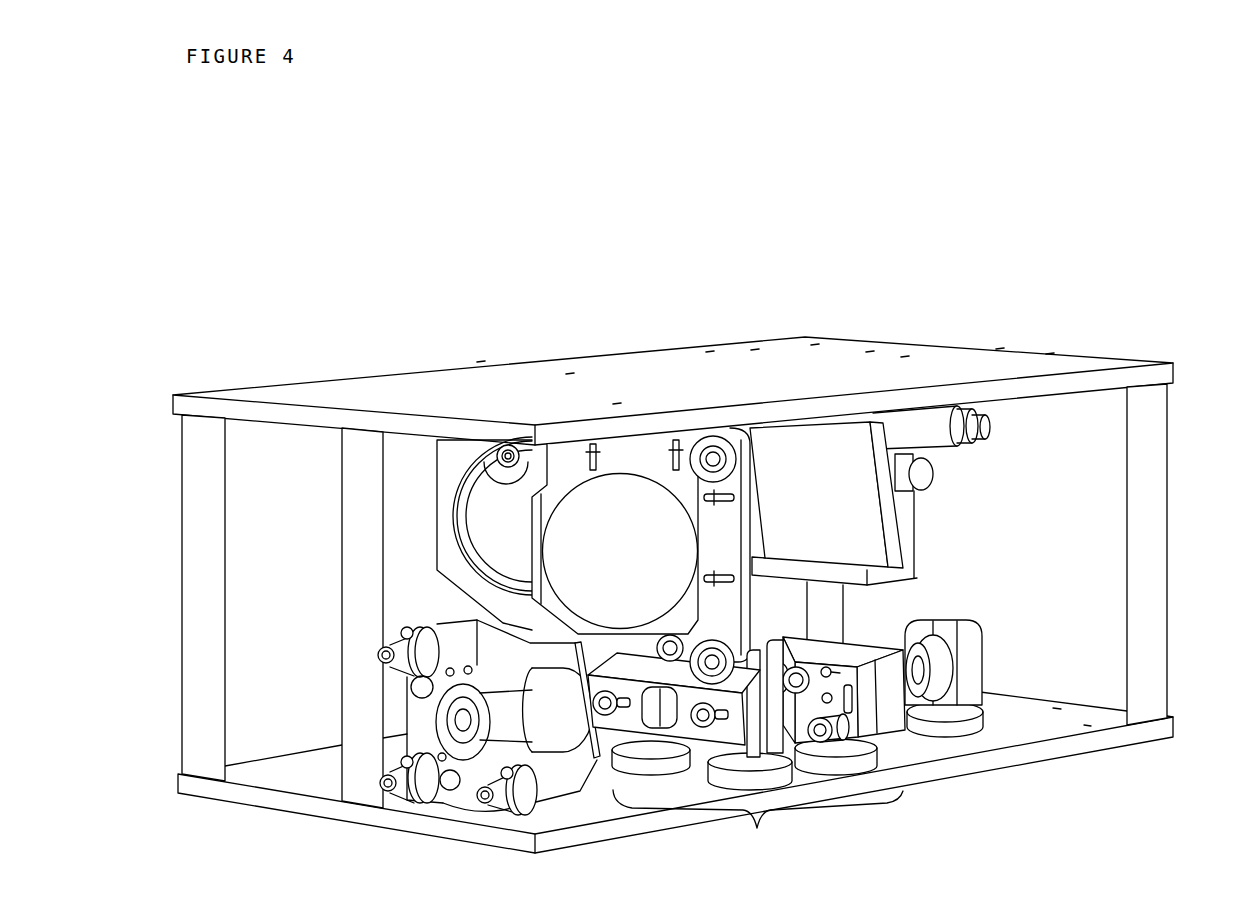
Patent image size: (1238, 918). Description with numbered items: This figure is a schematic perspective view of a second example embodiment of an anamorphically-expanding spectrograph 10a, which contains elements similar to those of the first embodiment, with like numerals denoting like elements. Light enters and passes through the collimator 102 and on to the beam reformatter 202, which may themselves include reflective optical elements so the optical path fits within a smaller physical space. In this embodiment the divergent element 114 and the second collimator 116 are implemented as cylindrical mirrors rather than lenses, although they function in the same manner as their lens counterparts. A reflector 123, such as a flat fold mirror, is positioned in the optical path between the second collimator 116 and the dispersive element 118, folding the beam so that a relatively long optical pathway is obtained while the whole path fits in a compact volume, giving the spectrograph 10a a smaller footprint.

The spectrograph 10a is at (709, 314).
The collimator 102 is at (921, 672).
The divergent element 114 is at (597, 760).
The second collimator 116 is at (850, 539).
The dispersive element 118 is at (466, 583).
The reflector 123 is at (600, 565).
The beam reformatter 202 is at (746, 746).